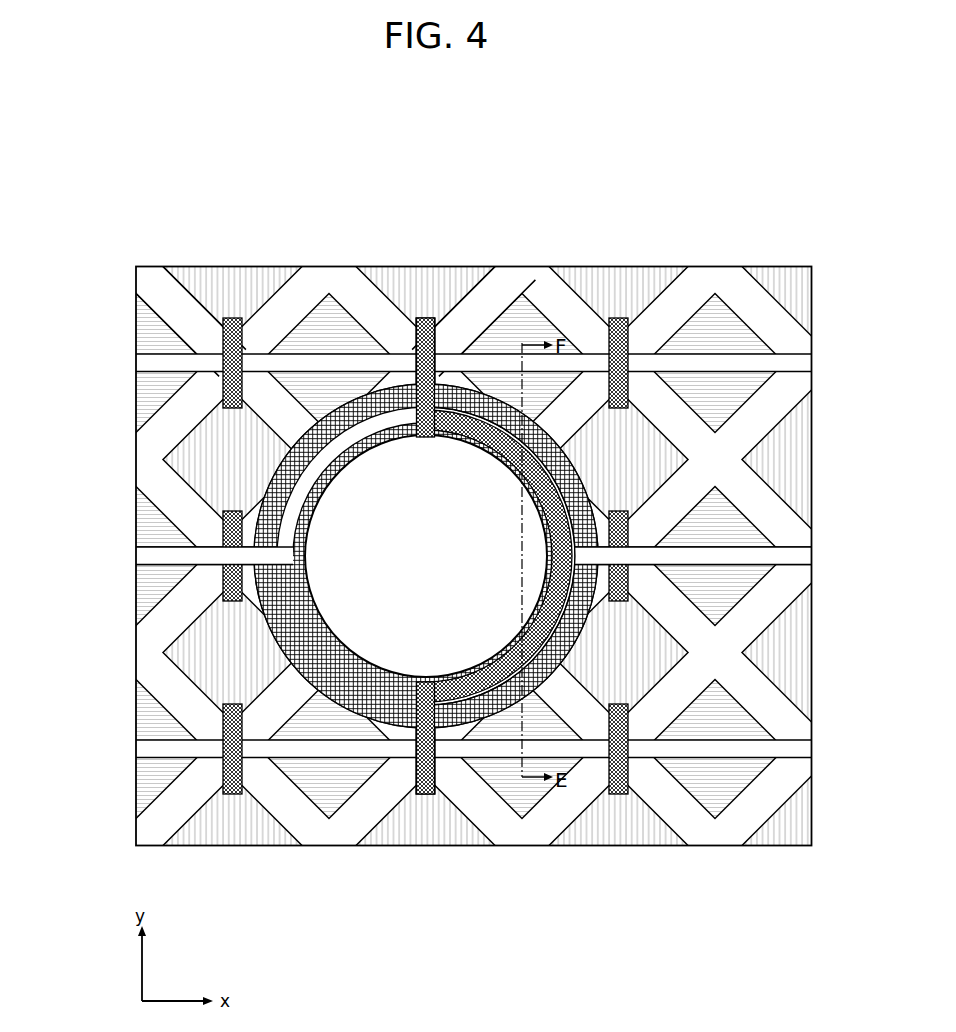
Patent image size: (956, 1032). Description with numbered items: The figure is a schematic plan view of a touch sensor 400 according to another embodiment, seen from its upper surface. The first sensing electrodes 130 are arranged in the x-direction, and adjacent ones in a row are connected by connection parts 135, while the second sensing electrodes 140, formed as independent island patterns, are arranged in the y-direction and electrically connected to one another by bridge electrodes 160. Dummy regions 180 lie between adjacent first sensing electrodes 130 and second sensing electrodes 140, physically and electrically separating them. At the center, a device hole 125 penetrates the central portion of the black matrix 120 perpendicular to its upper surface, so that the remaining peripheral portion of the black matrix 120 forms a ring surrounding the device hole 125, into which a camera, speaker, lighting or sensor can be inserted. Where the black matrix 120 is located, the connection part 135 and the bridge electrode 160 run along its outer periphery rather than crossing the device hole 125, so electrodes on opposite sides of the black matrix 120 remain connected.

The touch sensor 400 is at (97, 152).
The black matrix 120 is at (300, 613).
The device hole 125 is at (383, 633).
The first sensing electrode 130 is at (338, 326).
The connection part 135 is at (222, 326).
The second sensing electrode 140 is at (183, 451).
The bridge electrode 160 is at (222, 393).
The dummy region 180 is at (500, 298).